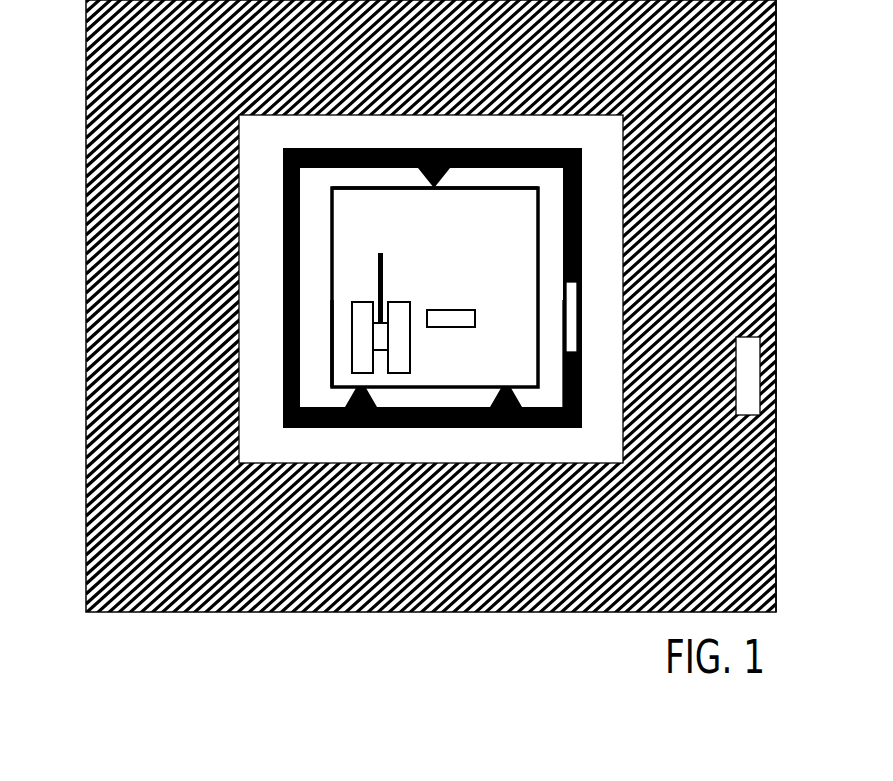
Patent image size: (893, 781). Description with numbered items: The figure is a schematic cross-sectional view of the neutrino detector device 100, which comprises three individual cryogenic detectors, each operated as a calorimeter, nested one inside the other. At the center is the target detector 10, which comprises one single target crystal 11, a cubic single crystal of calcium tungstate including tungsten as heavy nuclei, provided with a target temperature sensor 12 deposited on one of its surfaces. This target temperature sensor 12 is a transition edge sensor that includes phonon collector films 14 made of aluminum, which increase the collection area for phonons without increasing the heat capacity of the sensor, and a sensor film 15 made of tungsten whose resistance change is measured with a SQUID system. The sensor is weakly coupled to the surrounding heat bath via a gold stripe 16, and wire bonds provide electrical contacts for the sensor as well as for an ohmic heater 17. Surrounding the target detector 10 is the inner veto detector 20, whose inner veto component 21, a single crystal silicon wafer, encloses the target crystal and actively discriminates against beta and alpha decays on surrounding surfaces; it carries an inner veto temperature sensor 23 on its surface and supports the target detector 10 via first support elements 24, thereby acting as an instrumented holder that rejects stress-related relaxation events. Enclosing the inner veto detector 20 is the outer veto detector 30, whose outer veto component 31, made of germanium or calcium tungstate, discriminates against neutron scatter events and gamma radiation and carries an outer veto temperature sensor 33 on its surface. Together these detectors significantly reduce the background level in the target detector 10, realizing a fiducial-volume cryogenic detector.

The neutrino detector device 100 is at (118, 630).
The outer veto detector 30 is at (776, 75).
The outer veto component 31 is at (777, 268).
The outer veto temperature sensor 33 is at (757, 375).
The inner veto detector 20 is at (583, 225).
The inner veto temperature sensor 23 is at (577, 338).
The inner veto component 21 is at (562, 372).
The first support elements 24 is at (446, 187).
The target detector 10 is at (503, 226).
The target crystal 11 is at (357, 204).
The target temperature sensor 12 is at (352, 348).
The phonon collector films 14 is at (360, 338).
The sensor film 15 is at (382, 338).
The stripe 16 is at (384, 258).
The ohmic heater 17 is at (452, 312).